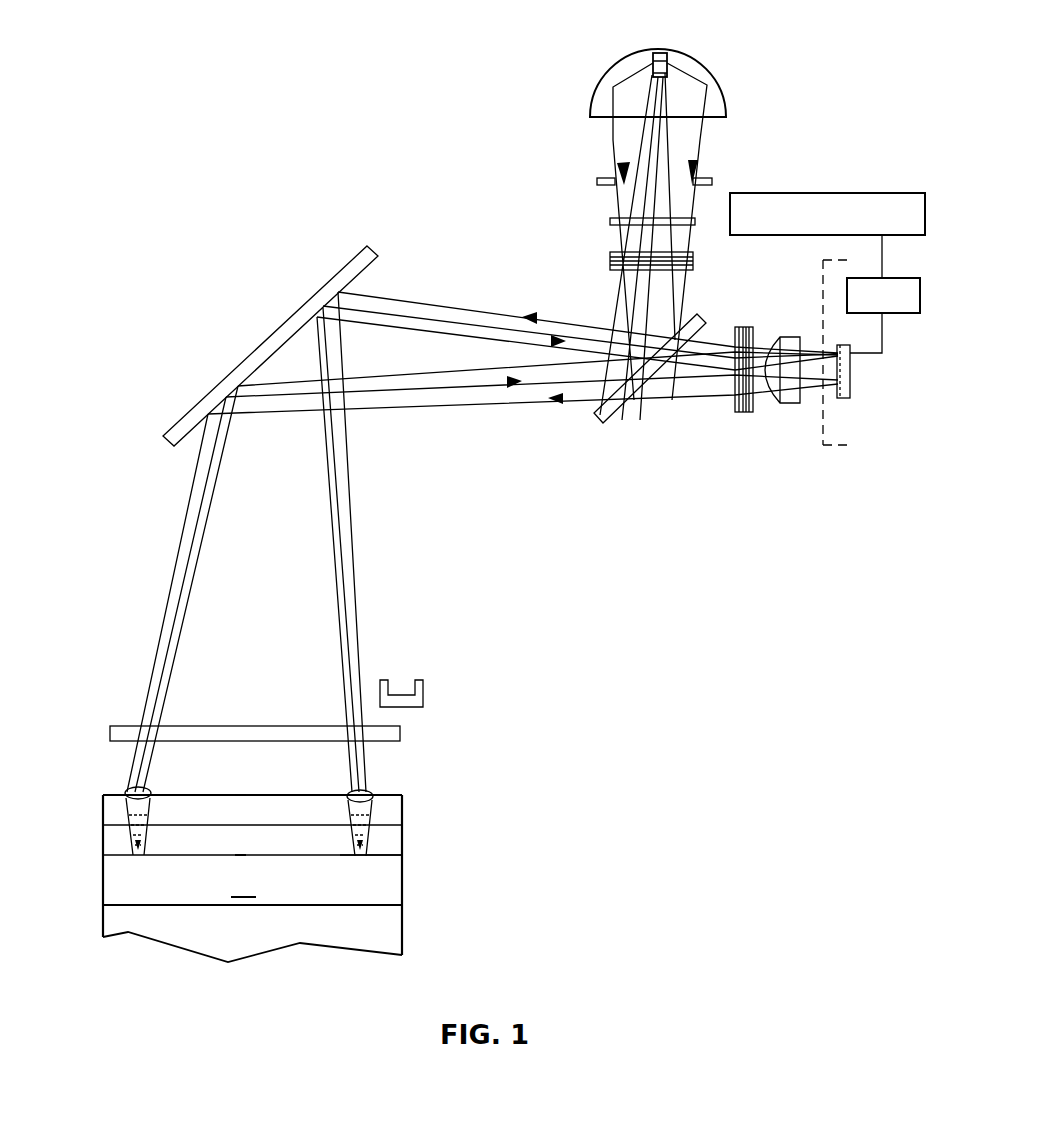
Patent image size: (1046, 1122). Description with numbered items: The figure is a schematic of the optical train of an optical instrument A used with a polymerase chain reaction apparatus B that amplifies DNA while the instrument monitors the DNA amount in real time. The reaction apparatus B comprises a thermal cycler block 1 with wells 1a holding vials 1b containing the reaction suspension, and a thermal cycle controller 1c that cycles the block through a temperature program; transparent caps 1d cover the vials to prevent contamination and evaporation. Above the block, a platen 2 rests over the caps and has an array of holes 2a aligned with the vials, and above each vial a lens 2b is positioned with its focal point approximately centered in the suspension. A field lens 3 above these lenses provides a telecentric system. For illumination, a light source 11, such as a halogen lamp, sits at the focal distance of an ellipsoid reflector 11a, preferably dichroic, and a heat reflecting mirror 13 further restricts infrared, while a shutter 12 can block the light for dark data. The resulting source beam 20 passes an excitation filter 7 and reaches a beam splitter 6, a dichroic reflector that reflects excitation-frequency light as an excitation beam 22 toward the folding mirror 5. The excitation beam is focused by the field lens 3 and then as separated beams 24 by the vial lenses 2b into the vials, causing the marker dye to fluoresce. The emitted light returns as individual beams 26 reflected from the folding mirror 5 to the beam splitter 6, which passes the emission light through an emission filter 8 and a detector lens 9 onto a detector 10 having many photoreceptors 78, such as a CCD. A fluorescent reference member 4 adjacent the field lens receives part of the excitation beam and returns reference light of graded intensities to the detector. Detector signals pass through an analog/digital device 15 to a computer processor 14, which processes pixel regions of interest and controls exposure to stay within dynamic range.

The thermal cycler block 1 is at (182, 823).
The wells 1a is at (365, 853).
The vial 1b is at (373, 835).
The thermal cycle controller 1c is at (252, 915).
The caps 1d is at (372, 830).
The platen 2 is at (228, 795).
The holes 2a is at (126, 803).
The lens 2b is at (367, 793).
The field lens 3 is at (240, 726).
The fluorescent reference member 4 is at (423, 694).
The folding mirror 5 is at (262, 342).
The beam splitter 6 is at (598, 420).
The excitation filter 7 is at (610, 262).
The emission filter 8 is at (740, 414).
The detector lens 9 is at (782, 405).
The detector 10 is at (828, 395).
The light source 11 is at (655, 63).
The ellipsoid reflector 11a is at (592, 92).
The shutter 12 is at (703, 178).
The heat reflecting mirror 13 is at (695, 222).
The computer processor 14 is at (912, 235).
The analog/digital device 15 is at (912, 313).
The source beam 20 is at (617, 143).
The excitation beam 22 is at (448, 305).
The separated beams 24 is at (135, 755).
The individual beams 26 is at (452, 388).
The photoreceptors 78 is at (845, 400).
The optical instrument A is at (280, 188).
The reaction apparatus B is at (408, 890).